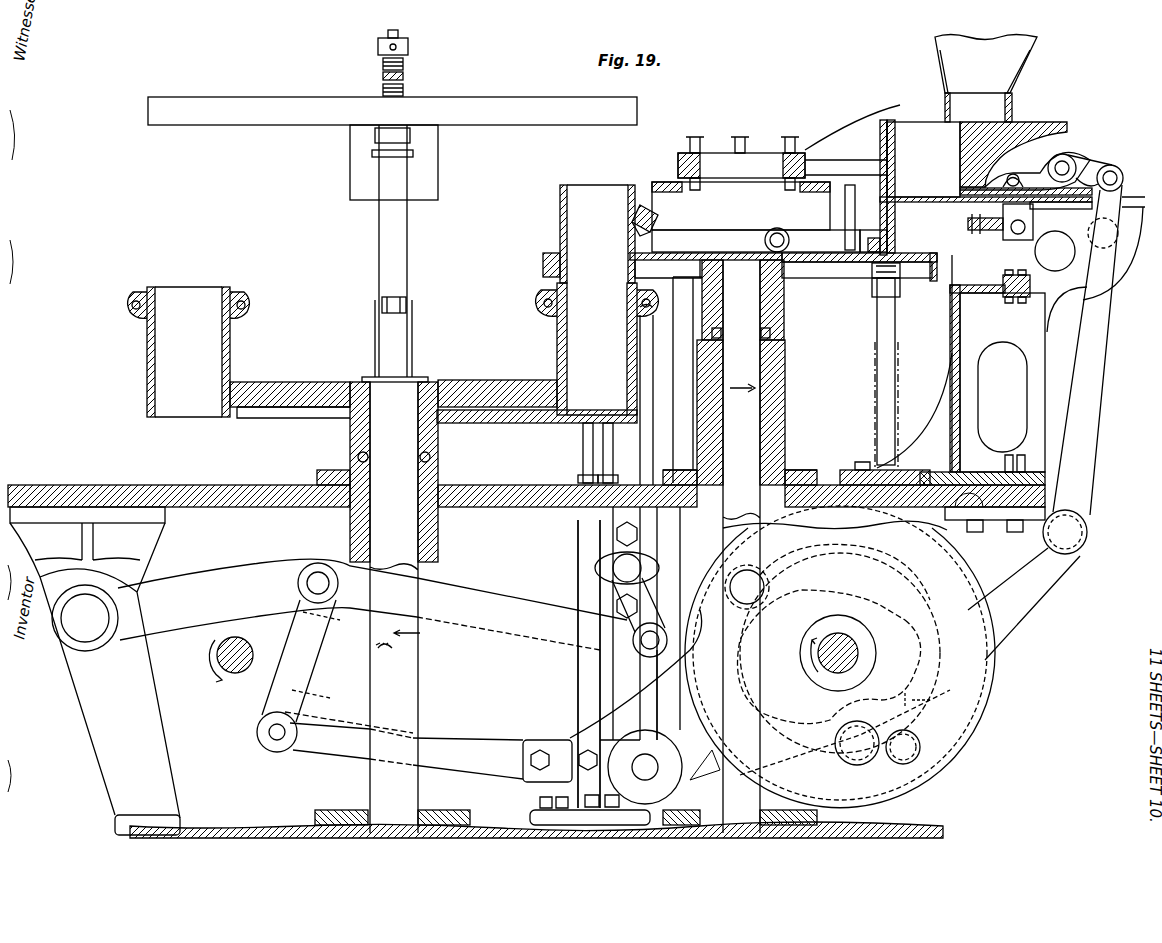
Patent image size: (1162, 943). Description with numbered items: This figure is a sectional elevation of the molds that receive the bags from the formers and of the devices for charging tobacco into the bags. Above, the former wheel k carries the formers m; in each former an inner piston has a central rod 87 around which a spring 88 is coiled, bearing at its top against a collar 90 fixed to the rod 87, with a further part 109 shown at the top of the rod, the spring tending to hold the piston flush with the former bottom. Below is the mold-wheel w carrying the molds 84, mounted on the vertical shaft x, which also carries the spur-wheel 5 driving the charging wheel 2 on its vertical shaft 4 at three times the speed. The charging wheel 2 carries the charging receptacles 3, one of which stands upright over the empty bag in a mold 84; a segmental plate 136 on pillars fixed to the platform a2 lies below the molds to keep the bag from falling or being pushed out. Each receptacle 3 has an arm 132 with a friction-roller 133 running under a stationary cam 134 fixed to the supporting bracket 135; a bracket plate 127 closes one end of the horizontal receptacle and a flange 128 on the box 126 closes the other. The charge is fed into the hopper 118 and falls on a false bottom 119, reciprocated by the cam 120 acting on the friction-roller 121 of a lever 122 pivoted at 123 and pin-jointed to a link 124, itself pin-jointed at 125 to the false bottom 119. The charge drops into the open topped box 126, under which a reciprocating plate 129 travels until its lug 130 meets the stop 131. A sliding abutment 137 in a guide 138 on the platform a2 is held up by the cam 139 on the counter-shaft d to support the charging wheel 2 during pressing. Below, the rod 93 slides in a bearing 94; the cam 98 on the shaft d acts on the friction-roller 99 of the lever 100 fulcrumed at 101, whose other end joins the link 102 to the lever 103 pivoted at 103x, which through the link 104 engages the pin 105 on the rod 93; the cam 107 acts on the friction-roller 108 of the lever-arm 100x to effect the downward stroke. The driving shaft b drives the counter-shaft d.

The central rod 87 is at (410, 40).
The collar 90 is at (405, 62).
The spring 88 is at (405, 76).
The lock nut 109 is at (405, 92).
The former wheel k is at (528, 104).
The former m is at (408, 253).
The mold 84 is at (222, 338).
The mold-wheel w is at (470, 392).
The vertical shaft x is at (368, 428).
The segmental plate 136 is at (478, 428).
The rod 93 is at (656, 438).
The charging receptacle 3 is at (562, 217).
The charging wheel 2 is at (832, 262).
The vertical shaft 4 is at (722, 528).
The stationary cam 134 is at (750, 200).
The friction-roller 133 is at (672, 222).
The arm 132 is at (648, 230).
The bracket plate 127 is at (800, 240).
The supporting bracket 135 is at (846, 145).
The flange 128 is at (848, 210).
The spur-wheel 5 is at (866, 250).
The sliding abutment 137 is at (896, 322).
The guide 138 is at (874, 386).
The hopper 118 is at (1032, 58).
The false bottom 119 is at (975, 126).
The open topped chamber or box 126 is at (958, 156).
The pin joint 125 is at (1070, 165).
The link 124 is at (1118, 176).
The horizontally reciprocating plate 129 is at (1030, 200).
The stop 131 is at (1018, 234).
The lug 130 is at (1040, 245).
The lever 122 is at (1098, 333).
The pivot 123 is at (1090, 533).
The cam 139 is at (955, 540).
The cam 107 is at (915, 570).
The friction-roller 108 is at (775, 587).
The counter-shaft d is at (845, 640).
The cam 98 is at (906, 662).
The cam 120 is at (902, 702).
The friction-roller 121 is at (920, 747).
The friction-roller 99 is at (860, 765).
The lever 100 is at (840, 768).
The fulcrum 101 is at (660, 748).
The link 104 is at (680, 586).
The pin 105 is at (612, 566).
The bearing or guide 94 is at (580, 594).
The lever 103 is at (460, 622).
The link 102 is at (308, 660).
The driving shaft b is at (231, 668).
The pivot 103x is at (85, 642).
The lever-arm 100x is at (600, 706).
The platform a2 is at (484, 507).